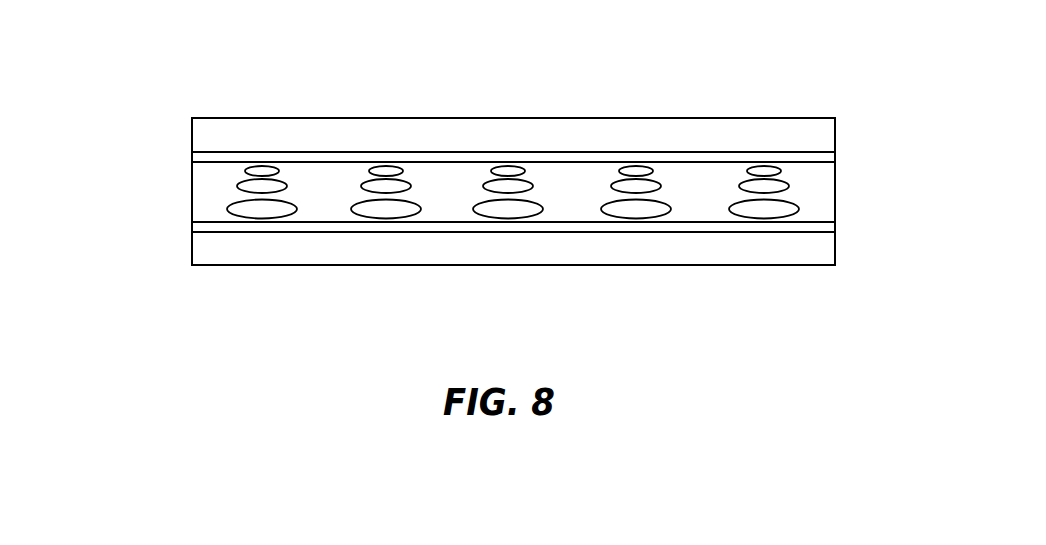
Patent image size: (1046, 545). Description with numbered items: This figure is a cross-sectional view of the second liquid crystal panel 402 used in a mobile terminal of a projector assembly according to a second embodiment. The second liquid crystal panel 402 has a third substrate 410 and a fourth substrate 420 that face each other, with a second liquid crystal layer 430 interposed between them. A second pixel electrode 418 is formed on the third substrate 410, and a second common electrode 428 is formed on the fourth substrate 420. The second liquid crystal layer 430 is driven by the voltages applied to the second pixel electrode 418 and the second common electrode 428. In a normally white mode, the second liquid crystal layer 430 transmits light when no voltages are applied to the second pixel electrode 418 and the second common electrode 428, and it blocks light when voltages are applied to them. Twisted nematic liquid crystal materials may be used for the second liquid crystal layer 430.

The second liquid crystal panel 402 is at (158, 189).
The third substrate 410 is at (532, 253).
The second pixel electrode 418 is at (413, 228).
The fourth substrate 420 is at (400, 126).
The second common electrode 428 is at (530, 152).
The second liquid crystal layer 430 is at (822, 193).